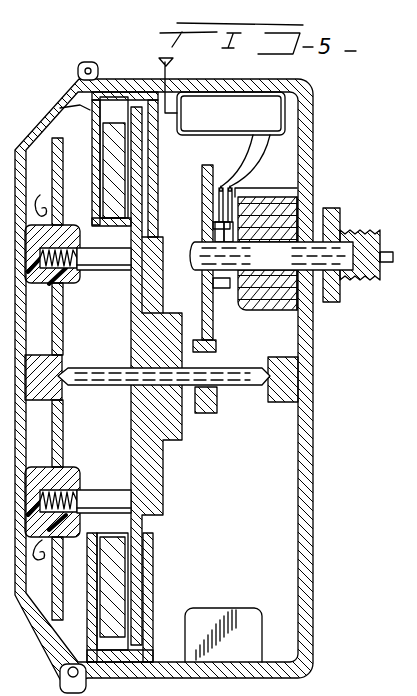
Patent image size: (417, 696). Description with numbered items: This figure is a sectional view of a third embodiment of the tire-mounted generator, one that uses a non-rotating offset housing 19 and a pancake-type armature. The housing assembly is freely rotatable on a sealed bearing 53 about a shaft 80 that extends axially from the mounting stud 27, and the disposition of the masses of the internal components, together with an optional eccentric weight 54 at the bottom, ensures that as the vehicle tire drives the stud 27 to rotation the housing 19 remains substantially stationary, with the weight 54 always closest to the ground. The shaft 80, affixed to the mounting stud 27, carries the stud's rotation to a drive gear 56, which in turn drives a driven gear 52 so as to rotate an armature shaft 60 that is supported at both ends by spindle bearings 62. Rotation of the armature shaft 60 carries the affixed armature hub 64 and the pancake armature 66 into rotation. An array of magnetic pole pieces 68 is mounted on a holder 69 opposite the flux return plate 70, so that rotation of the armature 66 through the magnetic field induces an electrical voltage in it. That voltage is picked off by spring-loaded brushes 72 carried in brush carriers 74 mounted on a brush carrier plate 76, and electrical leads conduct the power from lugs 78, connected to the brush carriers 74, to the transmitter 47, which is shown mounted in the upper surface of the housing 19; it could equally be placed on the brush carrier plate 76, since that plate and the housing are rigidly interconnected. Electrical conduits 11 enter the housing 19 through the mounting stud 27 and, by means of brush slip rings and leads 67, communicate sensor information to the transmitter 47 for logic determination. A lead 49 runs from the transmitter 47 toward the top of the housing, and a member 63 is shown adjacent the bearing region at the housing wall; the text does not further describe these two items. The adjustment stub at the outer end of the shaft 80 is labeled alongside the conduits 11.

The electrical conduits 11 is at (392, 252).
The housing 19 is at (313, 140).
The mounting stud 27 is at (351, 252).
The transmitter 47 is at (231, 113).
The lead wire 49 is at (162, 66).
The driven gear 52 is at (222, 350).
The sealed bearing 53 is at (277, 278).
The eccentric weight 54 is at (222, 608).
The drive gear 56 is at (204, 162).
The armature shaft 60 is at (240, 386).
The spindle bearings 62 is at (63, 390).
The coil housing 63 is at (307, 197).
The armature hub 64 is at (131, 340).
The pancake armature 66 is at (133, 285).
The leads 67 is at (262, 157).
The magnetic pole pieces 68 is at (113, 373).
The holder 69 is at (90, 110).
The flux return plate 70 is at (160, 182).
The spring-loaded brushes 72 is at (124, 268).
The brush carriers 74 is at (43, 283).
The brush carrier plate 76 is at (63, 176).
The lugs 78 is at (40, 195).
The shaft 80 is at (271, 256).